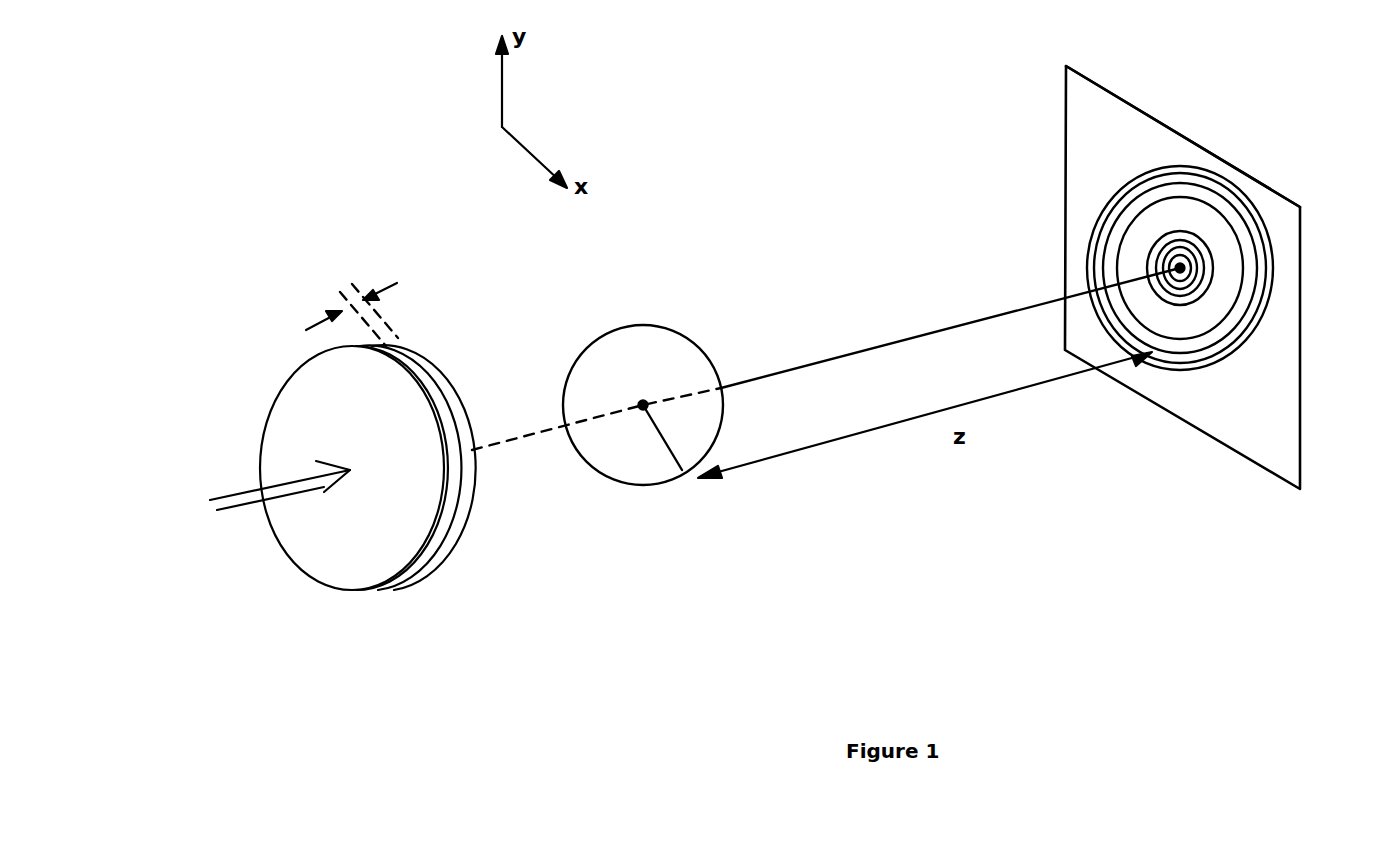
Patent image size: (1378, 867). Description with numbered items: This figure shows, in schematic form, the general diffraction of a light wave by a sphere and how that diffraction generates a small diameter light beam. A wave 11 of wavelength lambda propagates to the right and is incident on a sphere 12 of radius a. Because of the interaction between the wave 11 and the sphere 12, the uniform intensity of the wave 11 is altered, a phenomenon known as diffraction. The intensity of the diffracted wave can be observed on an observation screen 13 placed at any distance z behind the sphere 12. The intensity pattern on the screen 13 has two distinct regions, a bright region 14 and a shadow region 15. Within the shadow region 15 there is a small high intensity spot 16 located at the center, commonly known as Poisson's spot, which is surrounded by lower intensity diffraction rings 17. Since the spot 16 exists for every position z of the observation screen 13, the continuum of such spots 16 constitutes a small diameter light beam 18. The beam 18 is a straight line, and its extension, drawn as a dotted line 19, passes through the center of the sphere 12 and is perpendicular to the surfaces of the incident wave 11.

The wave 11 is at (433, 355).
The sphere 12 is at (638, 318).
The observation screen 13 is at (1203, 433).
The bright region 14 is at (1108, 125).
The shadow region 15 is at (1173, 213).
The high intensity spot 16 is at (1190, 253).
The diffraction rings 17 is at (1205, 270).
The small diameter light beam 18 is at (855, 352).
The dotted line 19 is at (532, 433).